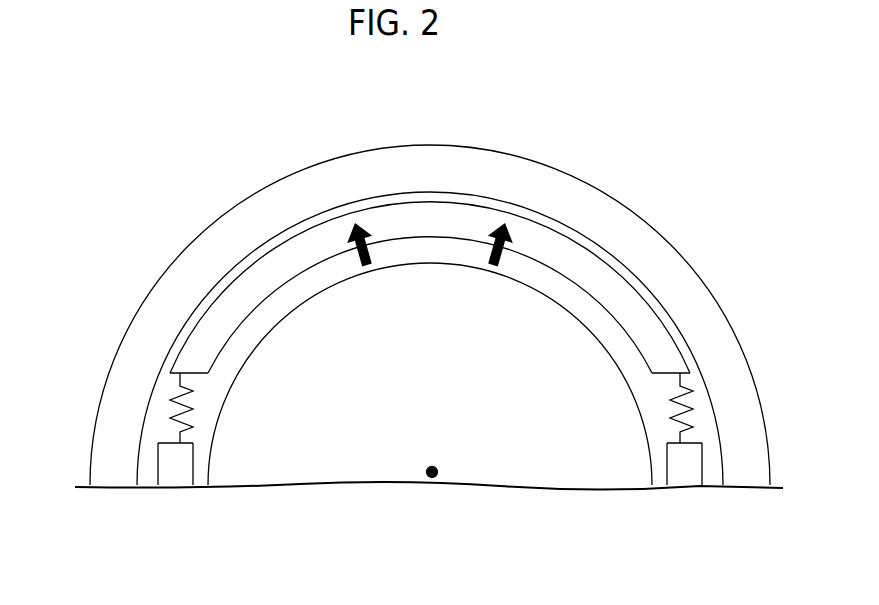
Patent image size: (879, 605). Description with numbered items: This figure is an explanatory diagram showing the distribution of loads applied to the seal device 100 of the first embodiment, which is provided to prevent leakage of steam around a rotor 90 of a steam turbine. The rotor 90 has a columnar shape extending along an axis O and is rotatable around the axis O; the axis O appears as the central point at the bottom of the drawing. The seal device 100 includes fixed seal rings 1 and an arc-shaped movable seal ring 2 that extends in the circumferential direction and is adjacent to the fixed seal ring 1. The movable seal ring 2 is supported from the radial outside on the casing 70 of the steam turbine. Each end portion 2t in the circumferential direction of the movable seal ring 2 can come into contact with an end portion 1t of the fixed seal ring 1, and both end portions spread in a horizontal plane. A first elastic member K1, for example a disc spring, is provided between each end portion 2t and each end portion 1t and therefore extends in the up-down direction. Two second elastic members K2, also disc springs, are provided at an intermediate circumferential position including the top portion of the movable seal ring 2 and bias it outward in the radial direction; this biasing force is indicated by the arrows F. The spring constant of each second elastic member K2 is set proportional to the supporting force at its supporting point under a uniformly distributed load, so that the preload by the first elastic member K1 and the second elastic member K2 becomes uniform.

The seal device 100 is at (416, 268).
The casing 70 is at (200, 252).
The movable seal ring 2 is at (373, 258).
The end portion of the movable seal ring 2t is at (158, 375).
The first elastic member K1 is at (173, 407).
The fixed seal ring 1 is at (371, 502).
The end portion of the fixed seal ring 1t is at (167, 432).
The rotor 90 is at (333, 450).
The axis O is at (440, 473).
The second elastic member K2 is at (432, 283).